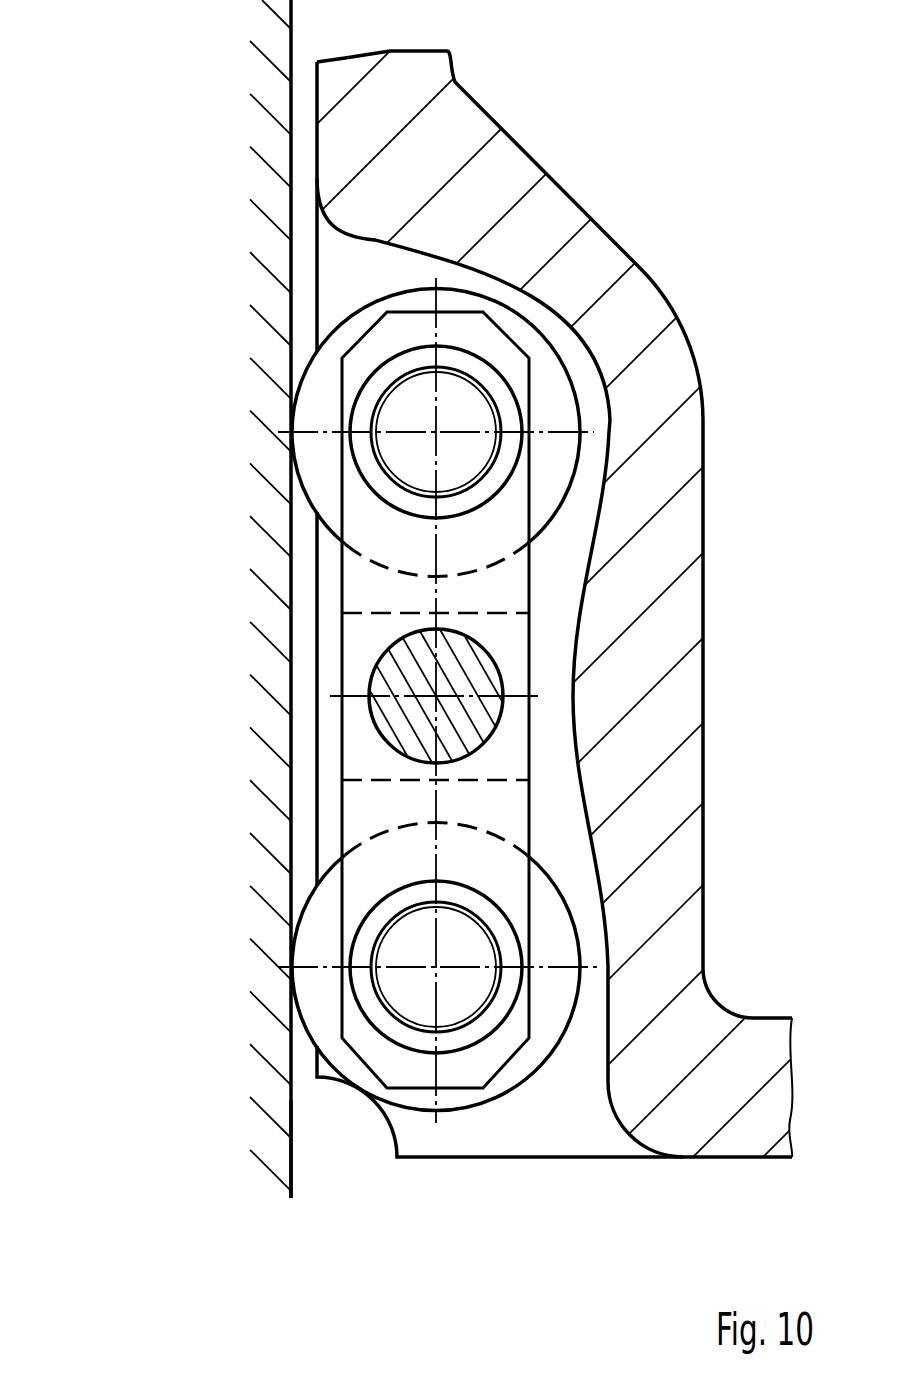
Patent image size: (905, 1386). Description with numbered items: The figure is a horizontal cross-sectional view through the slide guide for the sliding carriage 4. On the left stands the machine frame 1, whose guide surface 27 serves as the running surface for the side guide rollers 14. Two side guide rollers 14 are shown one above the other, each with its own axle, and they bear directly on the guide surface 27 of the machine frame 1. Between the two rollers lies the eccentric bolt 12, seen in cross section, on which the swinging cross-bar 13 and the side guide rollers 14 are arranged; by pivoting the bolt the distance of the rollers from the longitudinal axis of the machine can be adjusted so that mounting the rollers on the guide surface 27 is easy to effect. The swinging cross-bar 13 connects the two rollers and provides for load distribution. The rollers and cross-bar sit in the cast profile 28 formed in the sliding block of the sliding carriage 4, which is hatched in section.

The machine frame 1 is at (275, 1112).
The sliding carriage 4 is at (703, 1087).
The eccentric bolt 12 is at (410, 723).
The swinging cross-bar 13 is at (380, 638).
The side guide rollers 14 is at (323, 460).
The guide surface 27 is at (293, 1175).
The cast profile 28 is at (607, 1038).